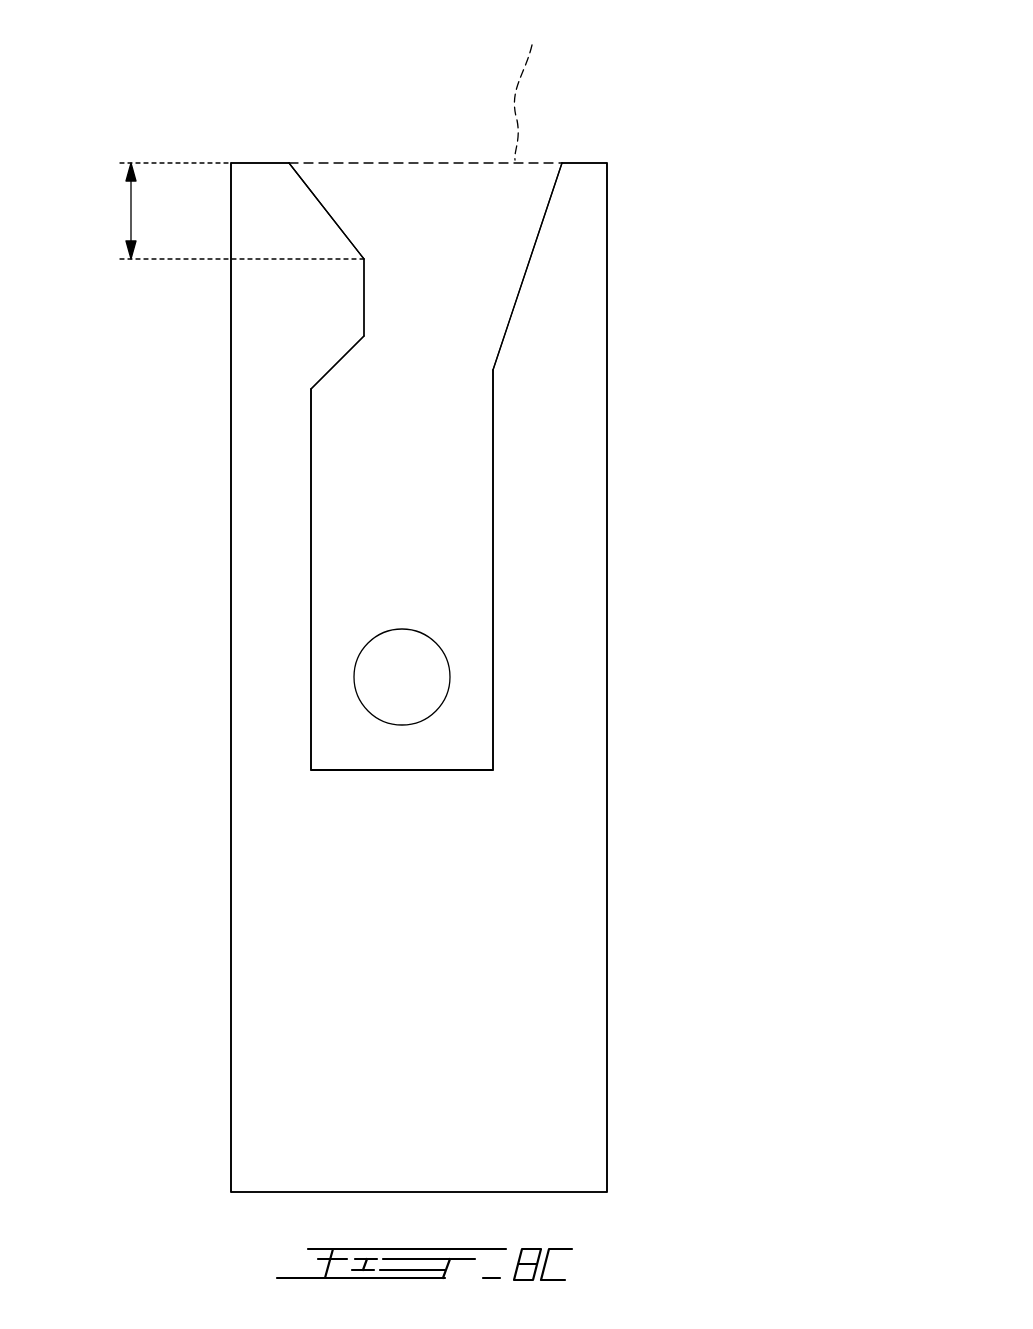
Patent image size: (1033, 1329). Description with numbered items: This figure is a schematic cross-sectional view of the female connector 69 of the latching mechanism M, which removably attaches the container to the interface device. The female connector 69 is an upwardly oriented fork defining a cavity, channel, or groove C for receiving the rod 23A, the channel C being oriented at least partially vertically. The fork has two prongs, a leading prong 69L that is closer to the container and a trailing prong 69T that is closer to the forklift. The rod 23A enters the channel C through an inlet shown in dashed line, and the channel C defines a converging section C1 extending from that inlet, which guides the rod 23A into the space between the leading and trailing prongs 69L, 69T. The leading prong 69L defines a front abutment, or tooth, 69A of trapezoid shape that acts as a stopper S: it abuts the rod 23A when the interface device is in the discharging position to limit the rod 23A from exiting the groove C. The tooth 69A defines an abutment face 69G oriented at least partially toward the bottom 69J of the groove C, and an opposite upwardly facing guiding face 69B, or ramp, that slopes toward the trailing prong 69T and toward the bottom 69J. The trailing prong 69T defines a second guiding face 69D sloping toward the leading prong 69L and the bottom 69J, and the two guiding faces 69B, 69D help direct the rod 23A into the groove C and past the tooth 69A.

The latching mechanism M is at (175, 92).
The female connector 69 is at (718, 218).
The guiding face 69B is at (327, 210).
The front abutment 69A is at (367, 296).
The abutment face 69G is at (342, 368).
The second guiding face 69D is at (520, 294).
The stopper S is at (367, 362).
The channel C is at (407, 543).
The bottom of the groove 69J is at (405, 771).
The leading prong 69L is at (231, 543).
The trailing prong 69T is at (607, 478).
The rod 23A is at (450, 676).
The converging section C1 is at (131, 211).